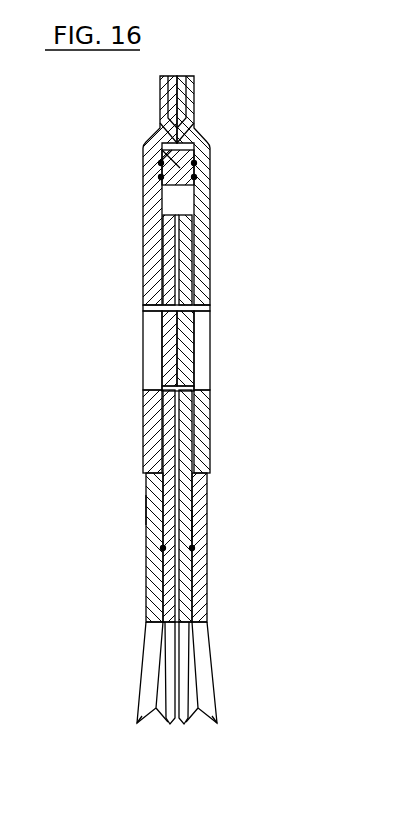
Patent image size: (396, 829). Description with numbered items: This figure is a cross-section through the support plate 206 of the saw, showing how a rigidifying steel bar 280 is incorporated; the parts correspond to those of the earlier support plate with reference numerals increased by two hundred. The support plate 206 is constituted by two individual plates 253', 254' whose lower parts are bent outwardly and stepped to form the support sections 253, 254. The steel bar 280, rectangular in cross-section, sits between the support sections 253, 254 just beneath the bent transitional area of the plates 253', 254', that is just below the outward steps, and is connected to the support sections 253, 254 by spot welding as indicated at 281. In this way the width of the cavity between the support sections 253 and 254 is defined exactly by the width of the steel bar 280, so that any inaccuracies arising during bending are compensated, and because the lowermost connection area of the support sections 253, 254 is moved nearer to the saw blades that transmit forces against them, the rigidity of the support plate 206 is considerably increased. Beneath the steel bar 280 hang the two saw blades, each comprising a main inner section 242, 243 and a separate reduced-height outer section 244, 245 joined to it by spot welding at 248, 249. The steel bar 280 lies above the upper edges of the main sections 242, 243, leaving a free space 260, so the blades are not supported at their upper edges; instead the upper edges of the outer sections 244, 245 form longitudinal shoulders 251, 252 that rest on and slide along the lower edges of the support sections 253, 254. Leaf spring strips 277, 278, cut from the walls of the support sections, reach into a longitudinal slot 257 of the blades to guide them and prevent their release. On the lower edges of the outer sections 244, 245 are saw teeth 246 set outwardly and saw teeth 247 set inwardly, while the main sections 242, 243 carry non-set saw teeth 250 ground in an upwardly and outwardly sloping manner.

The support plate 206 is at (209, 87).
The individual plate 254' is at (126, 190).
The individual plate 253' is at (261, 190).
The steel bar 280 is at (161, 143).
The spot welding 281 is at (160, 163).
The main section of saw blade 243 is at (167, 250).
The main section of saw blade 242 is at (188, 283).
The free space 260 is at (178, 207).
The longitudinal slot 257 is at (163, 302).
The leaf spring strip 278 is at (172, 335).
The leaf spring strip 277 is at (192, 328).
The support section 254 is at (91, 431).
The support section 253 is at (246, 431).
The longitudinal shoulder 252 is at (150, 483).
The longitudinal shoulder 251 is at (201, 488).
The outer section of saw blade 245 is at (149, 510).
The outer section of saw blade 244 is at (193, 525).
The spot weld connection 249 is at (163, 548).
The spot weld connection 248 is at (192, 548).
The saw teeth 246 is at (150, 677).
The non-set saw teeth 250 is at (168, 634).
The saw teeth 247 is at (157, 711).